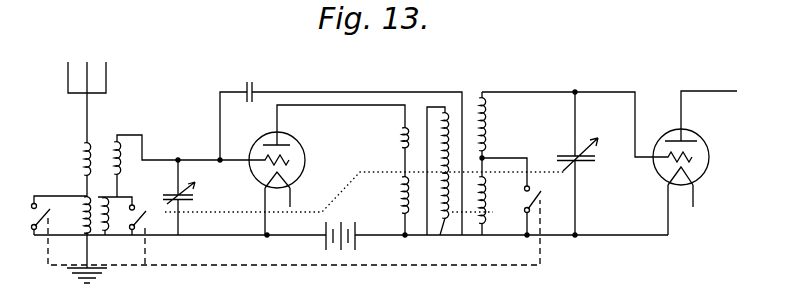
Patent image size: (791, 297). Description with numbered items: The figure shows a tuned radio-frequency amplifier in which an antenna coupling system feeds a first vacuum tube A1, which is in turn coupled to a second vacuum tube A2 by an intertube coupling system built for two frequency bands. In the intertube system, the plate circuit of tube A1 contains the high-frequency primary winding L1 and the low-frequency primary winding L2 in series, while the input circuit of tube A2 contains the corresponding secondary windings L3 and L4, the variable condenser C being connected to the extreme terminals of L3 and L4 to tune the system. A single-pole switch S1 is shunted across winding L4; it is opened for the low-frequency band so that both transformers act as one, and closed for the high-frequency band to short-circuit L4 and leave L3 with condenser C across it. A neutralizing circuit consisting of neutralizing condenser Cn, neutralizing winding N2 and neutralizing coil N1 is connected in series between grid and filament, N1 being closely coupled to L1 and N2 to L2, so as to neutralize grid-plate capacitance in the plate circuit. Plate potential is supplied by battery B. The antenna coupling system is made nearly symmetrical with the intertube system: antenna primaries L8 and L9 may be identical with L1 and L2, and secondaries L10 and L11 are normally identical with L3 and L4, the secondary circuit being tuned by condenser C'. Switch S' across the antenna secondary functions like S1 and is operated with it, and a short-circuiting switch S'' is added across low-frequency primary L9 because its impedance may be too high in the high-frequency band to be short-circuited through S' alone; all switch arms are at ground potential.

The high-frequency antenna primary inductance L8 is at (82, 163).
The low-frequency antenna primary inductance L9 is at (83, 229).
The high-frequency antenna secondary inductance L10 is at (121, 158).
The low-frequency antenna secondary inductance L11 is at (108, 232).
The short-circuiting switch S'' is at (60, 215).
The secondary switch S' is at (142, 205).
The tuning condenser C' is at (191, 197).
The neutralizing condenser Cn is at (254, 85).
The first vacuum tube A1 is at (305, 160).
The high-frequency primary winding L1 is at (399, 142).
The low-frequency primary winding L2 is at (398, 206).
The battery B is at (350, 226).
The neutralizing coil N1 is at (441, 151).
The neutralizing winding N2 is at (443, 221).
The high-frequency secondary winding L3 is at (491, 113).
The low-frequency secondary winding L4 is at (491, 211).
The single-pole switch S1 is at (541, 197).
The variable condenser C is at (582, 163).
The second vacuum tube A2 is at (711, 139).